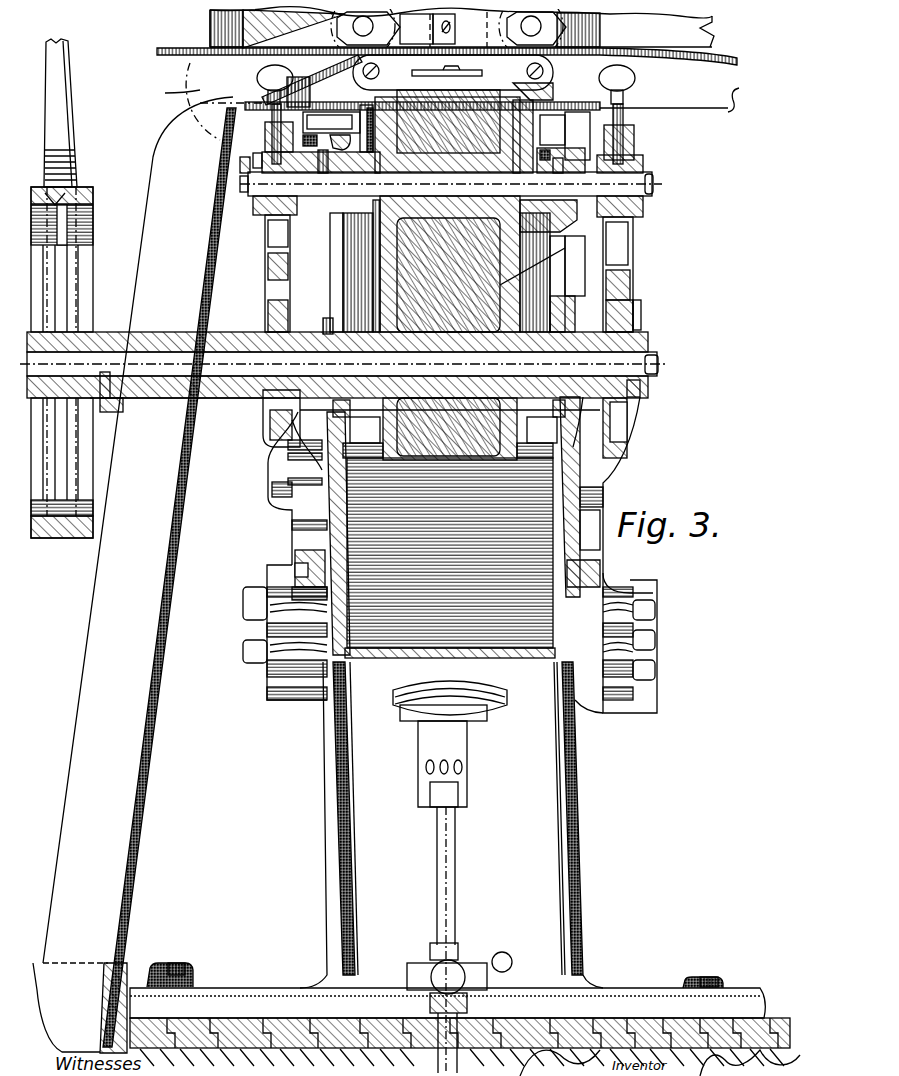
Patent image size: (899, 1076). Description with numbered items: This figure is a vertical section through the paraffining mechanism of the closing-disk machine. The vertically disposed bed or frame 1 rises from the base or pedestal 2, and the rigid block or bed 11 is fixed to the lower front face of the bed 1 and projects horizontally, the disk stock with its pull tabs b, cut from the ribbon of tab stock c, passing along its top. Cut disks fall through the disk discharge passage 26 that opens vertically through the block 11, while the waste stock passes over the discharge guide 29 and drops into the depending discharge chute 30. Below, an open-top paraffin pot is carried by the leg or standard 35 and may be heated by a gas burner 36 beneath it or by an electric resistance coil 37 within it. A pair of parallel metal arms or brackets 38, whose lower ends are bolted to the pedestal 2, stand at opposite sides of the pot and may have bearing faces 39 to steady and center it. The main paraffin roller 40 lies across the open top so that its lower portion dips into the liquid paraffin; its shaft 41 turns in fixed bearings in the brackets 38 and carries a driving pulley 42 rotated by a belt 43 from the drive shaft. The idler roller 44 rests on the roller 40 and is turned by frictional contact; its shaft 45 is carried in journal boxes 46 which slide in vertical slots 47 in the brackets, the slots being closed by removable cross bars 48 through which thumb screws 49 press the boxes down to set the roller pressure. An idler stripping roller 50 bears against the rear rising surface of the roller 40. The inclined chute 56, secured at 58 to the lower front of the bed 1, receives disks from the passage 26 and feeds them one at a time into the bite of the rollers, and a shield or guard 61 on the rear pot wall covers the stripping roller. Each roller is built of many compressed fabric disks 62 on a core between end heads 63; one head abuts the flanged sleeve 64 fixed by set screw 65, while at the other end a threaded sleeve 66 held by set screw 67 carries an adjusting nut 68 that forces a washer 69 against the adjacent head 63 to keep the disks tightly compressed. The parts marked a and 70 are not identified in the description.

The bed, frame or plate 1 is at (700, 108).
The base or pedestal 2 is at (566, 808).
The bed, block or wall 11 is at (448, 29).
The disk discharge passage 26 is at (405, 68).
The discharge guide 29 is at (203, 101).
The discharge chute 30 is at (395, 479).
The leg or standard 35 is at (470, 862).
The gas burner 36 is at (425, 708).
The electric heating or resistance coil 37 is at (292, 570).
The arms or brackets 38 is at (644, 498).
The bearing or abutting faces 39 is at (288, 478).
The paraffin roller 40 is at (447, 275).
The shaft 41 is at (660, 370).
The driving pulley 42 is at (85, 298).
The belt 43 is at (72, 137).
The paraffin idler roller 44 is at (565, 120).
The shaft 45 is at (654, 192).
The journal boxes 46 is at (263, 207).
The guide-ways or slots 47 is at (266, 248).
The cross bars 48 is at (265, 140).
The set or thumb screws 49 is at (256, 90).
The idler stripping roller 50 is at (335, 408).
The chute or guide 56 is at (453, 79).
The chute securing point 58 is at (345, 72).
The shield or guard 61 is at (575, 202).
The fabric disks 62 is at (356, 248).
The end heads 63 is at (345, 135).
The sleeve 64 is at (307, 72).
The set screw 65 is at (336, 332).
The sleeve 66 is at (600, 218).
The set screw 67 is at (667, 312).
The adjusting nut 68 is at (705, 292).
The washer 69 is at (545, 240).
The insulation 70 is at (550, 258).
The plate a is at (298, 33).
The handle or pull tabs b is at (452, 68).
The ribbon or band of tab stock c is at (440, 70).